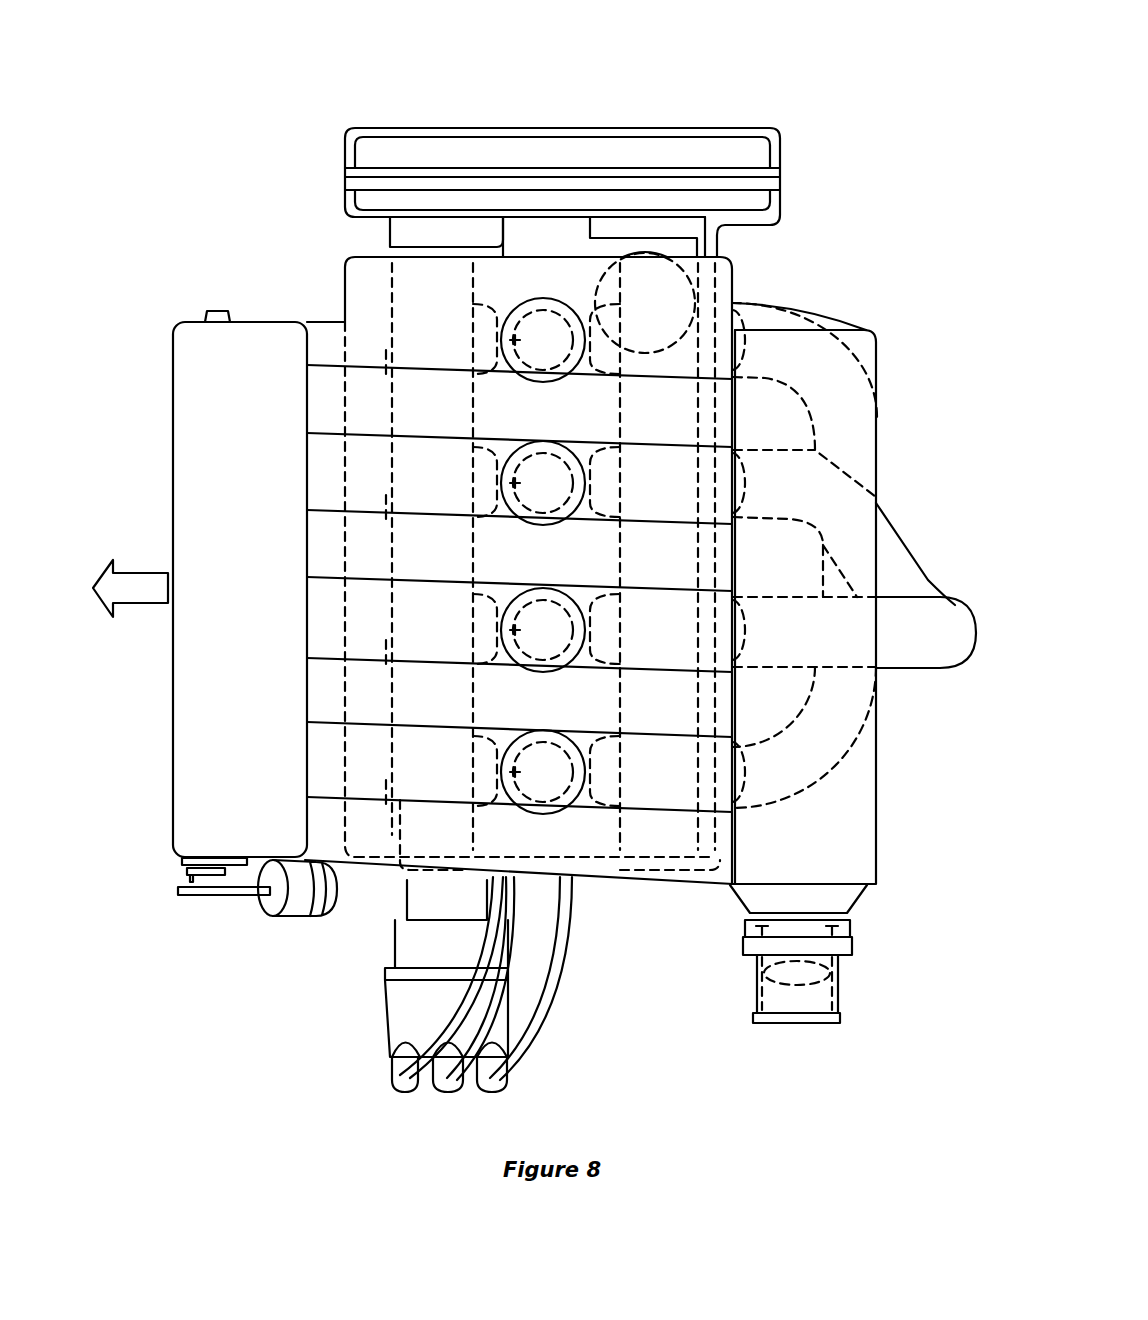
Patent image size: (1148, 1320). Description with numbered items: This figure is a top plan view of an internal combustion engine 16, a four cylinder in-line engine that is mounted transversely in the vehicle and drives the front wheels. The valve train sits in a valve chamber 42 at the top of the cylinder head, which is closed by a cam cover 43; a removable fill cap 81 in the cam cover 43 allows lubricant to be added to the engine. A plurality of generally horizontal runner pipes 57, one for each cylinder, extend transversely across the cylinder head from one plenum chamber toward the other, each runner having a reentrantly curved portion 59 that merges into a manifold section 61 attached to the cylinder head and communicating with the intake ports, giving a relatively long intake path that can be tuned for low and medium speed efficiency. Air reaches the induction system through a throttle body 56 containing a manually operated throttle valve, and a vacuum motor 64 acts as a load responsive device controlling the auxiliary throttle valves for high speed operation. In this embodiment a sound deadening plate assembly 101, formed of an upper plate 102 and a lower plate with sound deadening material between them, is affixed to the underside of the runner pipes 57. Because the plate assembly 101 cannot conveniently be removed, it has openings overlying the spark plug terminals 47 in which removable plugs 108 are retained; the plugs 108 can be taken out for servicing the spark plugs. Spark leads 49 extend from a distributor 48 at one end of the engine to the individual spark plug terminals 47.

The internal combustion engine 16 is at (796, 124).
The sound deadening plate assembly 101 is at (420, 283).
The cam cover 43 is at (573, 267).
The removable plug 108 is at (545, 298).
The removable fill cap 81 is at (717, 291).
The manifold section 61 is at (335, 324).
The reentrantly curved portion 59 is at (378, 383).
The spark plug terminal 47 is at (490, 335).
The valve chamber 42 is at (877, 423).
The runner pipe 57 is at (726, 425).
The upper plate 102 is at (593, 852).
The spark lead 49 is at (540, 1000).
The vacuum motor 64 is at (273, 917).
The distributor 48 is at (395, 1003).
The throttle body 56 is at (807, 1005).